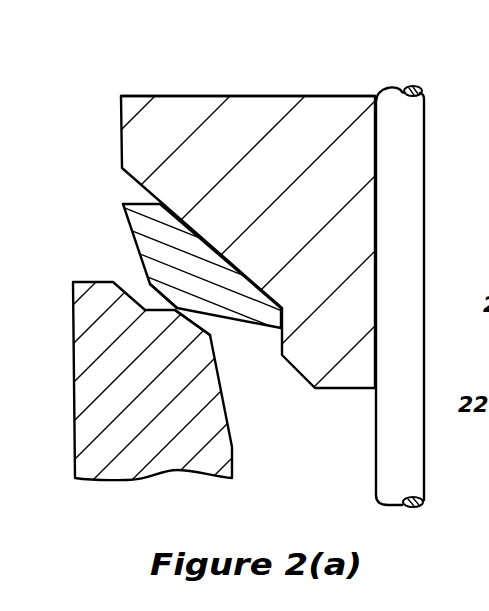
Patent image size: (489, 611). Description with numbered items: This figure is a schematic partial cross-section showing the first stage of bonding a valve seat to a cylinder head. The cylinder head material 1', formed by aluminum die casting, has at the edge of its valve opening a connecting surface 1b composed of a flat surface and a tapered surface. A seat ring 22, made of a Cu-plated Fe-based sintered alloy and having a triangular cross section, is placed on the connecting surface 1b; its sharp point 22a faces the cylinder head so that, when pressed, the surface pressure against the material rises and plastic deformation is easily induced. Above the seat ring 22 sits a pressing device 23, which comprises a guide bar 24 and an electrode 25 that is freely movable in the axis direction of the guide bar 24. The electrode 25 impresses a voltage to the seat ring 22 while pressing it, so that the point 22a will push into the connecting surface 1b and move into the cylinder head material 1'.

The pressing device 23 is at (168, 87).
The electrode 25 is at (288, 95).
The guide bar 24 is at (425, 160).
The seat ring 22 is at (128, 240).
The point 22a is at (176, 302).
The cylinder head material 1' is at (244, 250).
The connecting surface 1b is at (203, 326).